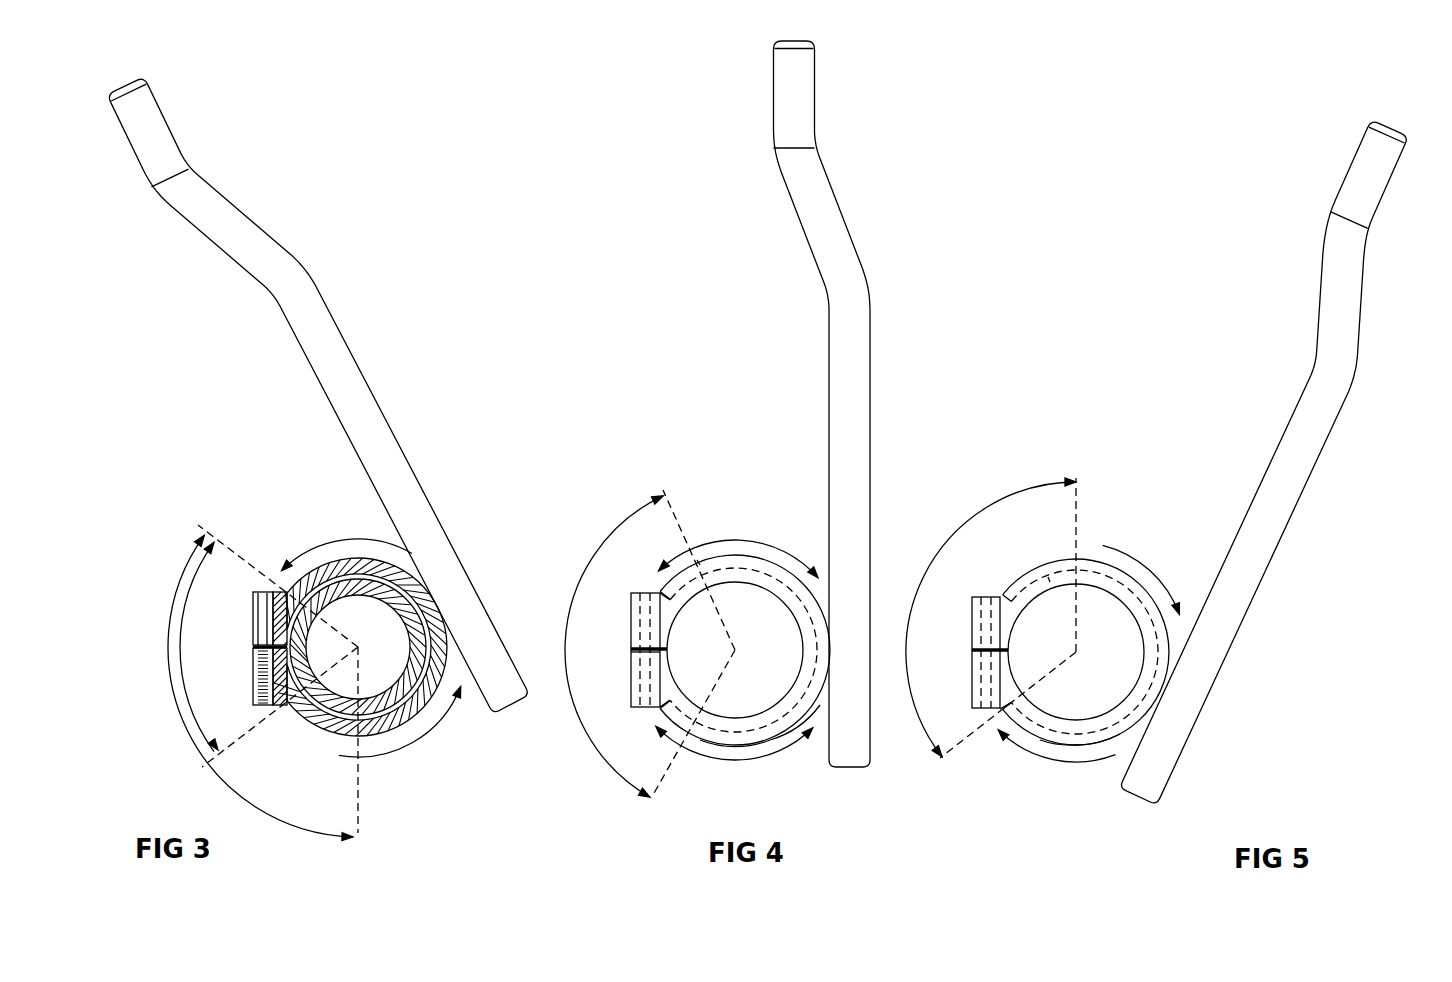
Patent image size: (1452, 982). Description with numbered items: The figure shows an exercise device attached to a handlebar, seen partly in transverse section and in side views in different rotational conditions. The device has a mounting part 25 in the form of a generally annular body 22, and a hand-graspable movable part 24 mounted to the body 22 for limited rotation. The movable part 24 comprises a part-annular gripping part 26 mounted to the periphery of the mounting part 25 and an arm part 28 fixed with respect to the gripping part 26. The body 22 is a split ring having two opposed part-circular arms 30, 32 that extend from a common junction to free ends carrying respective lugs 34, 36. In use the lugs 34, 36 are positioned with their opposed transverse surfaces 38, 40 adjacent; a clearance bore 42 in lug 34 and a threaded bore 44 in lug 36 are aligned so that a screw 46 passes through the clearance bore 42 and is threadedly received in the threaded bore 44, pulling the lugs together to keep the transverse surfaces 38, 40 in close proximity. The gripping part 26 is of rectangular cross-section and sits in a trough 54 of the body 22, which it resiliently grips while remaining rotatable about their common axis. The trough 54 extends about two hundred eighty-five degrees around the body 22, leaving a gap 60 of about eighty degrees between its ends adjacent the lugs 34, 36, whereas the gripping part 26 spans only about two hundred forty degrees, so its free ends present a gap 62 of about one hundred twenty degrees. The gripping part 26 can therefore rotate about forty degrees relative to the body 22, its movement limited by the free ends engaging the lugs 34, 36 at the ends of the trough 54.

In FIG. 3, the annular body 22 is at (305, 718).
In FIG. 4, the annular body 22 is at (767, 737).
In FIG. 5, the annular body 22 is at (1040, 740).
In FIG. 3, the movable part 24 is at (452, 665).
In FIG. 4, the movable part 24 is at (870, 412).
In FIG. 5, the movable part 24 is at (1311, 476).
In FIG. 3, the mounting part 25 is at (341, 730).
In FIG. 4, the mounting part 25 is at (793, 728).
In FIG. 5, the mounting part 25 is at (1087, 747).
In FIG. 3, the gripping part 26 is at (423, 710).
In FIG. 4, the gripping part 26 is at (772, 572).
In FIG. 5, the gripping part 26 is at (1133, 587).
In FIG. 3, the arm part 28 is at (325, 353).
In FIG. 4, the arm part 28 is at (850, 333).
In FIG. 5, the arm part 28 is at (1338, 339).
In FIG. 4, the part circular arm 30 is at (760, 588).
In FIG. 5, the part circular arm 30 is at (1098, 592).
In FIG. 4, the part circular arm 32 is at (760, 717).
In FIG. 5, the part circular arm 32 is at (1095, 720).
In FIG. 4, the lug 34 is at (637, 591).
In FIG. 5, the lug 34 is at (982, 597).
In FIG. 4, the lug 36 is at (637, 708).
In FIG. 5, the lug 36 is at (995, 708).
In FIG. 3, the transverse surface 38 is at (287, 594).
In FIG. 4, the transverse surface 38 is at (663, 645).
In FIG. 5, the transverse surface 38 is at (1000, 645).
In FIG. 3, the transverse surface 40 is at (281, 707).
In FIG. 4, the transverse surface 40 is at (663, 655).
In FIG. 5, the transverse surface 40 is at (1000, 660).
In FIG. 3, the clearance bore 42 is at (253, 622).
In FIG. 4, the clearance bore 42 is at (632, 630).
In FIG. 3, the threaded bore 44 is at (255, 670).
In FIG. 4, the threaded bore 44 is at (632, 655).
In FIG. 3, the screw 46 is at (257, 596).
In FIG. 3, the trough 54 is at (372, 563).
In FIG. 4, the trough 54 is at (697, 560).
In FIG. 5, the trough 54 is at (1048, 577).
In FIG. 3, the gap 60 is at (262, 679).
In FIG. 3, the gap 62 is at (254, 687).
In FIG. 4, the gap 62 is at (647, 643).
In FIG. 5, the gap 62 is at (991, 618).